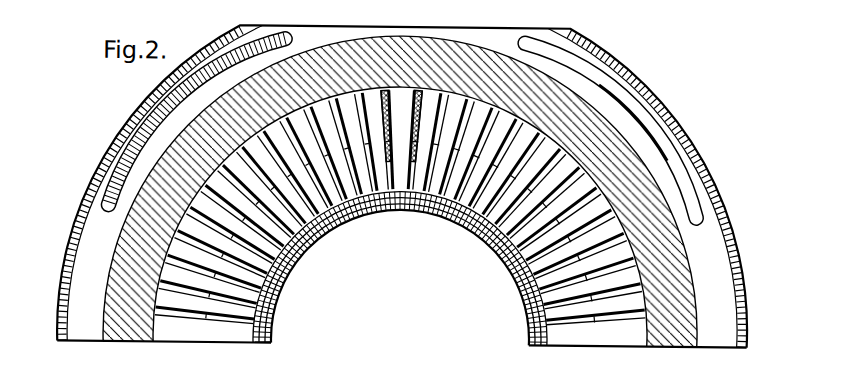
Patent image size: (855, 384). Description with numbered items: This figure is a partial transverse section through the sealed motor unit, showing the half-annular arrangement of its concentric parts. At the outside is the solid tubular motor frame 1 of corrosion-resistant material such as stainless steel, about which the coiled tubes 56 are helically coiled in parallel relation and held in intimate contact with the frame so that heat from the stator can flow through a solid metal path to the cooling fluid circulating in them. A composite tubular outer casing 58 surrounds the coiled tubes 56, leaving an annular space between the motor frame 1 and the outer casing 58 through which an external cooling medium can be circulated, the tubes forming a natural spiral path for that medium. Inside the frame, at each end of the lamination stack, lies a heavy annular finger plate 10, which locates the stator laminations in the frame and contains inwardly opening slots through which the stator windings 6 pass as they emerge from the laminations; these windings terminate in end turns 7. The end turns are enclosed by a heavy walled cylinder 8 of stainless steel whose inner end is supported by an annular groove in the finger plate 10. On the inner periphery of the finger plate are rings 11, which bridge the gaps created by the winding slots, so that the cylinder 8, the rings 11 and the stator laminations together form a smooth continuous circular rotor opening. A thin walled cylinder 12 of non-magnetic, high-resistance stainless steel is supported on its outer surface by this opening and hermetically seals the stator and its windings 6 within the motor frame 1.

The motor frame 1 is at (697, 309).
The stator windings 6 is at (410, 166).
The end turns 7 is at (418, 97).
The heavy walled cylinder 8 is at (500, 258).
The finger plate 10 is at (622, 244).
The ring 11 is at (399, 214).
The thin walled cylinder 12 is at (443, 217).
The coiled tubes 56 is at (128, 130).
The outer casing 58 is at (730, 252).